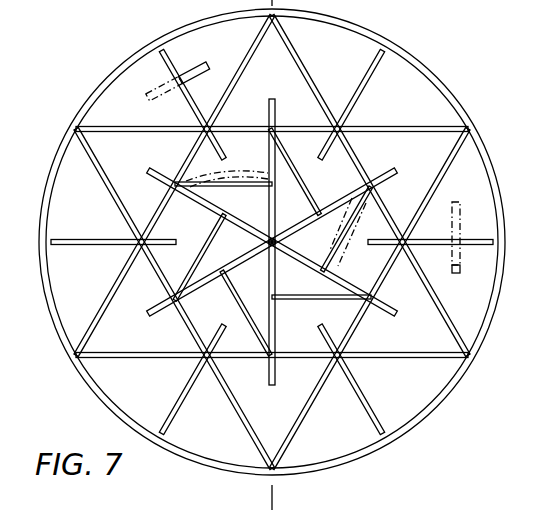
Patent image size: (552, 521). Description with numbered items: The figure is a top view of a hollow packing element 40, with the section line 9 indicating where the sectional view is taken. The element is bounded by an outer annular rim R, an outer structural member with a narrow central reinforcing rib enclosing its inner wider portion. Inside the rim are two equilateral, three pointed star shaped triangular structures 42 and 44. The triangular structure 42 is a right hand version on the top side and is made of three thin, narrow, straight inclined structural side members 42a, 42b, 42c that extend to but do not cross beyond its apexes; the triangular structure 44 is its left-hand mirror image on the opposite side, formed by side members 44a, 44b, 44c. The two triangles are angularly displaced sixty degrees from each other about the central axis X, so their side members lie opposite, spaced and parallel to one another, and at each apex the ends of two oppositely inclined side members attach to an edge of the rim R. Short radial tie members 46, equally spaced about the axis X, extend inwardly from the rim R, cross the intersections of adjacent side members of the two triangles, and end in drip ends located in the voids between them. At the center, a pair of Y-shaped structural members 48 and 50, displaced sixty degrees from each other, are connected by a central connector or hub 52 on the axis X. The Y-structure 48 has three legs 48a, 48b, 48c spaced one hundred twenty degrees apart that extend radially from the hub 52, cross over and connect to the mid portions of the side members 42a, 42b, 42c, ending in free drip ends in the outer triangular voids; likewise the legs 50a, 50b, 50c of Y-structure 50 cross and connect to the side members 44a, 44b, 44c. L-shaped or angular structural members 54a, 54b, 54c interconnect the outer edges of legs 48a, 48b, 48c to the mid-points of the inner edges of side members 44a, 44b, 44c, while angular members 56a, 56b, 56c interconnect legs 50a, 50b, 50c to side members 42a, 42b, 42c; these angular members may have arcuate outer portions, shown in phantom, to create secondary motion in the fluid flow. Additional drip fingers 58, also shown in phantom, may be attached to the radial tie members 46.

The packing element 40 is at (470, 108).
The triangular structure 42 is at (326, 74).
The structural side member 42a is at (453, 318).
The structural side member 42b is at (93, 320).
The structural side member 42c is at (404, 358).
The triangular structure 44 is at (145, 124).
The structural side member 44a is at (235, 420).
The structural side member 44b is at (306, 417).
The structural side member 44c is at (130, 126).
The radial tie member 46 is at (82, 242).
The Y-shaped structural member 48 is at (278, 373).
The radial structural member 48a is at (267, 386).
The radial structural member 48b is at (391, 173).
The radial structural member 48c is at (155, 170).
The Y-shaped structural member 50 is at (272, 100).
The radial structural member 50a is at (270, 111).
The radial structural member 50b is at (166, 313).
The radial structural member 50c is at (402, 314).
The central connector or hub 52 is at (279, 250).
The L-shaped structural member 54a is at (300, 300).
The L-shaped structural member 54b is at (303, 172).
The L-shaped structural member 54c is at (201, 243).
The L-shaped structural member 56a is at (213, 185).
The L-shaped structural member 56b is at (245, 310).
The L-shaped structural member 56c is at (352, 262).
The drip finger 58 is at (187, 62).
The central axis X is at (278, 238).
The outer annular rim R is at (452, 392).
The section line 9- 9 is at (275, 497).